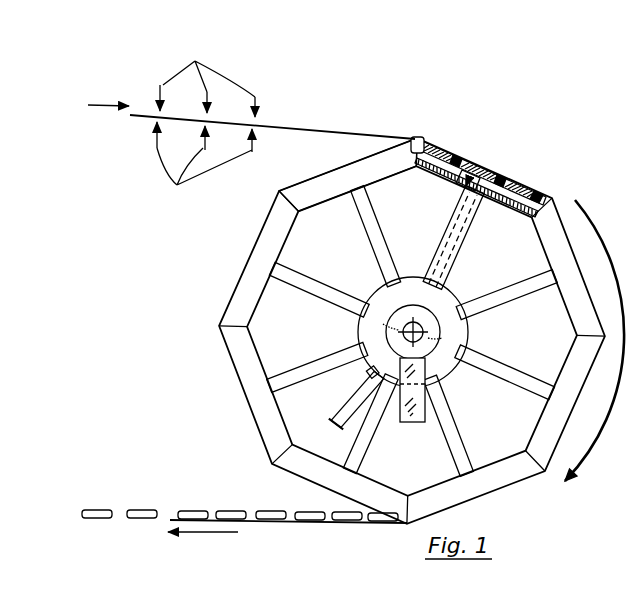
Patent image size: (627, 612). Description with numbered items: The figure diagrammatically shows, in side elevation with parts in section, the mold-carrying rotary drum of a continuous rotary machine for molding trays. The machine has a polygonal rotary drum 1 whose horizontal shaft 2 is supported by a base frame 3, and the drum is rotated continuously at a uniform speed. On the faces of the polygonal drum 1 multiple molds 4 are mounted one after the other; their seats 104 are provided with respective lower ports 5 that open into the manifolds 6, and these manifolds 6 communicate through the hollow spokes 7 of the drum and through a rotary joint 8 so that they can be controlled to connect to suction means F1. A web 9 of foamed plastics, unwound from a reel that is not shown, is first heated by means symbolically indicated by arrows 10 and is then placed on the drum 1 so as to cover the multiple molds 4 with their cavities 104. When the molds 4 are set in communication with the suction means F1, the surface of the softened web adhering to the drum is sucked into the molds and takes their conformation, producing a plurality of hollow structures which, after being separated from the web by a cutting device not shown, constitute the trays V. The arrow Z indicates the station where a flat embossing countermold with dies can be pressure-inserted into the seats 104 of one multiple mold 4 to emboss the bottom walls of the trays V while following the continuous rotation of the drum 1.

The polygonal rotary drum 1 is at (216, 325).
The horizontal shaft 2 is at (387, 333).
The base frame 3 is at (413, 424).
The multiple molds 4 is at (358, 172).
The lower ports 5 is at (453, 174).
The manifolds 6 is at (513, 201).
The hollow spokes 7 is at (462, 254).
The rotary joint 8 is at (468, 332).
The web of foamed plastics 9 is at (313, 126).
The heating means 10 is at (206, 126).
The seats 104 is at (414, 138).
The trays V is at (467, 160).
The embossing station Z is at (547, 104).
The suction means F1 is at (316, 446).